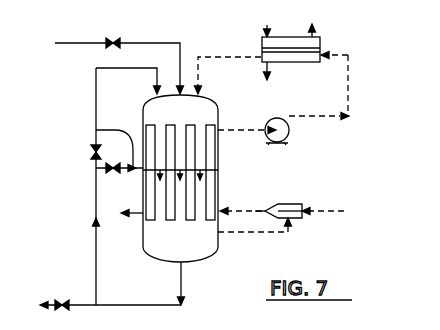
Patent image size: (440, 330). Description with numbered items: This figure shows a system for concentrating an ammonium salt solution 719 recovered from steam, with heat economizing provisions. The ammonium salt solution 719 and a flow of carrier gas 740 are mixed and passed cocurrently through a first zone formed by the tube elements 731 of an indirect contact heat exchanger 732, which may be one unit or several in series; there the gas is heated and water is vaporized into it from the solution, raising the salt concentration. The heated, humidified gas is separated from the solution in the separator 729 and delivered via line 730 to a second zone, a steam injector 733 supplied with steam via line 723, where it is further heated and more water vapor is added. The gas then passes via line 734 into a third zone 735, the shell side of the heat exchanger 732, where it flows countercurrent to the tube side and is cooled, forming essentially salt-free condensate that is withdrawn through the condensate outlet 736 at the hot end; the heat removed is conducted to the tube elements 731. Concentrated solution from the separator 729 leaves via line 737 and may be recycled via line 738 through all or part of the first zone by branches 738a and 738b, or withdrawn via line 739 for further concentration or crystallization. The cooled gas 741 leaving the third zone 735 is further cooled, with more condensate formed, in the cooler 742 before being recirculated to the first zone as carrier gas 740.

The ammonium salt solution 719 is at (76, 43).
The steam supply 723 is at (346, 212).
The separator 729 is at (197, 247).
The gas delivery line 730 is at (248, 234).
The tube elements 731 is at (200, 145).
The indirect contact heat exchanger 732 is at (219, 170).
The steam injector 733 is at (291, 204).
The gas passage from second zone 734 is at (254, 209).
The third zone 735 is at (220, 181).
The condensate outlet 736 is at (131, 211).
The concentrated solution withdrawal line 737 is at (184, 287).
The recycle line 738 is at (96, 247).
The recycle branch 738a is at (96, 88).
The recycle branch 738b is at (99, 148).
The withdrawal line 739 is at (80, 304).
The carrier gas 740 is at (239, 35).
The cooled gas 741 is at (235, 130).
The cooler 742 is at (320, 41).